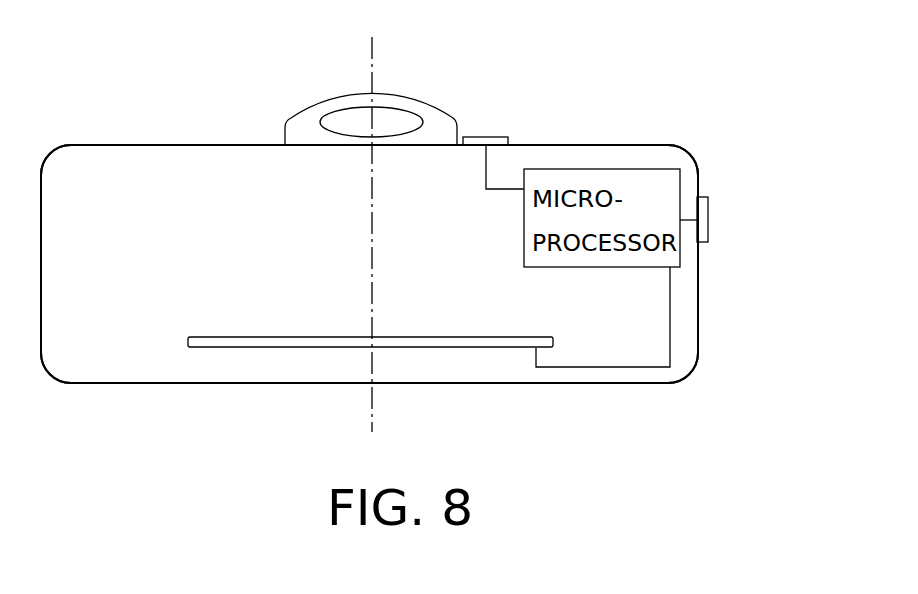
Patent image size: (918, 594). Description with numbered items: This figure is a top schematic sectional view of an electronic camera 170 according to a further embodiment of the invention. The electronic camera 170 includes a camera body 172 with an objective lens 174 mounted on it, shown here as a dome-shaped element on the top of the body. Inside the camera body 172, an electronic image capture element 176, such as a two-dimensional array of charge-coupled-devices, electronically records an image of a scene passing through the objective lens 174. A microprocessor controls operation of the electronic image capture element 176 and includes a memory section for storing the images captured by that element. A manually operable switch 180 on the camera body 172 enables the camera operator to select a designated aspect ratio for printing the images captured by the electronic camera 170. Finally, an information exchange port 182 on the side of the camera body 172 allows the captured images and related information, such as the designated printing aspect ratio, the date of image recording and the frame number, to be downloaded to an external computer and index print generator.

The electronic camera 170 is at (530, 433).
The camera body 172 is at (200, 145).
The objective lens 174 is at (466, 62).
The electronic image capture element 176 is at (265, 347).
The manually operable switch 180 is at (486, 137).
The information exchange port 182 is at (708, 220).